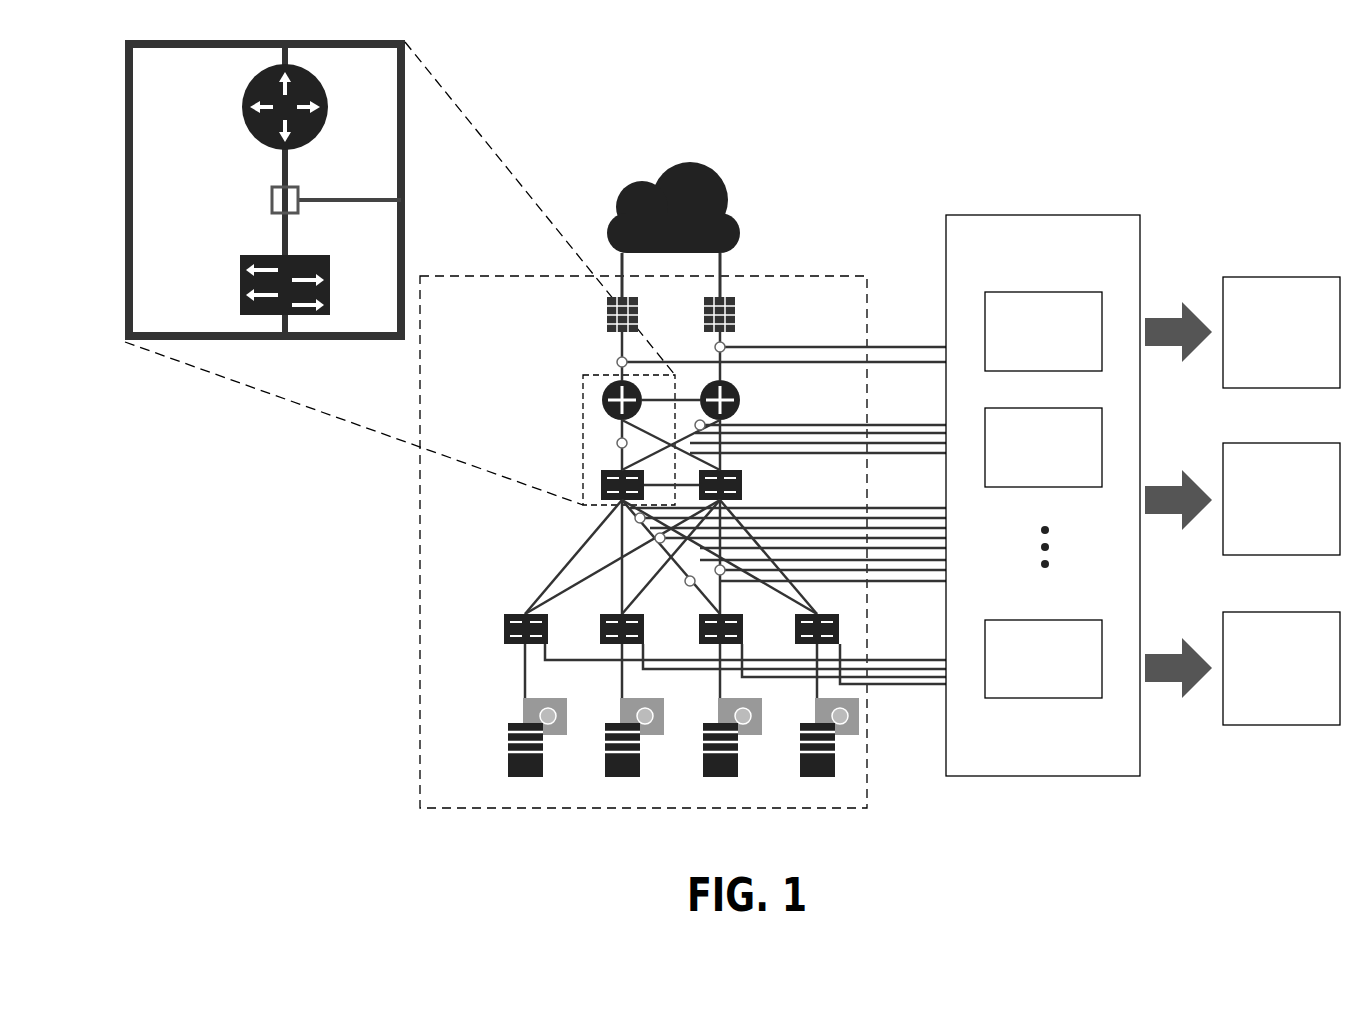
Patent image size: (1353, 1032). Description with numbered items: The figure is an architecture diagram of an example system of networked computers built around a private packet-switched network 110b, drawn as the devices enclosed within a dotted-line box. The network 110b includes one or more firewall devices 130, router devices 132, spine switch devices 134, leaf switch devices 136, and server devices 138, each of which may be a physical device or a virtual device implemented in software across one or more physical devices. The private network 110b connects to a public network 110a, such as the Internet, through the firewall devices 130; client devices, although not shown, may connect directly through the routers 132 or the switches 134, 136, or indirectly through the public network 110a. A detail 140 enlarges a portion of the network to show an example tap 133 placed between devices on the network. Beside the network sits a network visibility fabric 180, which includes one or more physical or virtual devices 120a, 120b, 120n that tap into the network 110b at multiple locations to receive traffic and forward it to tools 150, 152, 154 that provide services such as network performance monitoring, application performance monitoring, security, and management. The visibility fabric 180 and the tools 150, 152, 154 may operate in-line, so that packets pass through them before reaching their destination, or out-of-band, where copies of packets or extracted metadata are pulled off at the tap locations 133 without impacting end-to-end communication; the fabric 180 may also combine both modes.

The public network 110a is at (640, 187).
The network 110b is at (832, 274).
The firewall device 130 is at (737, 293).
The router device 132 is at (247, 108).
The tap 133 is at (270, 208).
The spine switch device 134 is at (242, 276).
The leaf switch device 136 is at (508, 612).
The server device 138 is at (510, 722).
The detail 140 is at (407, 230).
The network visibility fabric 180 is at (1025, 248).
The device 120a is at (1020, 342).
The device 120b is at (1020, 458).
The device 120n is at (1020, 669).
The tool 150 is at (1264, 343).
The tool 152 is at (1264, 510).
The tool 154 is at (1264, 679).